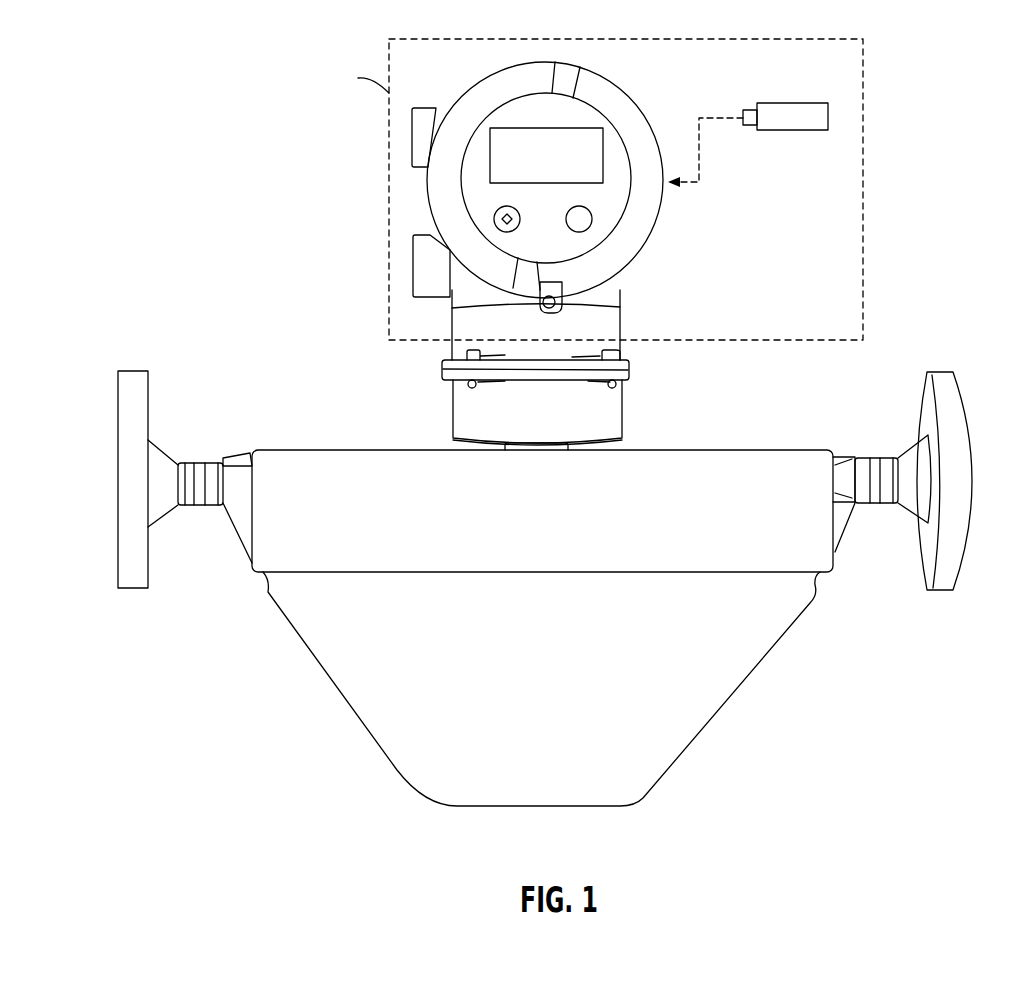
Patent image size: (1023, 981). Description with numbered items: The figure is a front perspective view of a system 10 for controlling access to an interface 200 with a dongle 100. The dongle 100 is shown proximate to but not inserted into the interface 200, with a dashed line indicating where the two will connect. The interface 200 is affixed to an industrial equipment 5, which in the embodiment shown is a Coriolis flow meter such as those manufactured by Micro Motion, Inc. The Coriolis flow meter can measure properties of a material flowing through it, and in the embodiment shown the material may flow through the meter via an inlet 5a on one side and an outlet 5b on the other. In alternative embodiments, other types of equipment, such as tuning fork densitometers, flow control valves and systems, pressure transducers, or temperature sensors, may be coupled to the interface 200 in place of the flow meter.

The system 10 is at (905, 100).
The industrial equipment 5 is at (773, 650).
The inlet 5a is at (118, 405).
The outlet 5b is at (953, 591).
The dongle 100 is at (792, 130).
The interface 200 is at (645, 238).